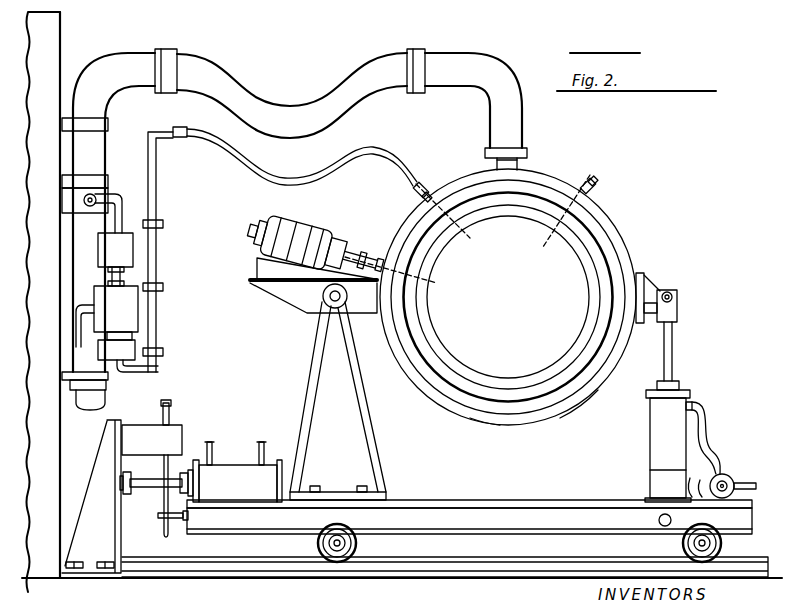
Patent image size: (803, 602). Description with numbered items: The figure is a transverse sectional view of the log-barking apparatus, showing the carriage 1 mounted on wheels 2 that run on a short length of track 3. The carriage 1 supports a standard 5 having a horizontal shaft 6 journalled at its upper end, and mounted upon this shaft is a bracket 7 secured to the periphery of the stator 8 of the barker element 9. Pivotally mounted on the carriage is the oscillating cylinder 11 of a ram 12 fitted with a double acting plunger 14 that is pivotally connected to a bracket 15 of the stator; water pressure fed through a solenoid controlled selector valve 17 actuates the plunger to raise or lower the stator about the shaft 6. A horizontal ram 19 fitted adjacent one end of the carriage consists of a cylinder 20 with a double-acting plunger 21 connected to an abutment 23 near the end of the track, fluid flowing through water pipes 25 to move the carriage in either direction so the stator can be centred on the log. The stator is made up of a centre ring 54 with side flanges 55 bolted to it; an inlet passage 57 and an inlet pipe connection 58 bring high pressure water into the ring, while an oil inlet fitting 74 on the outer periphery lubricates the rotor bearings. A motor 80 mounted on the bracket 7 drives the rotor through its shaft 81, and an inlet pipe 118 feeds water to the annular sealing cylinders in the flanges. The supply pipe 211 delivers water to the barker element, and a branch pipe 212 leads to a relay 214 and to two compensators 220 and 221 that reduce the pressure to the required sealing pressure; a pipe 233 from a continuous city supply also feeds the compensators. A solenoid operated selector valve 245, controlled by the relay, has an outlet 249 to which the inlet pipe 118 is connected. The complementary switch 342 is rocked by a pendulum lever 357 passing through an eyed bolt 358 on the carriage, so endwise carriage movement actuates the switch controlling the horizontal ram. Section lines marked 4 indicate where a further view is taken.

The carriage 1 is at (556, 522).
The wheels 2 is at (357, 543).
The track 3 is at (460, 568).
The section line 4- 4 is at (414, 181).
The standard 5 is at (358, 244).
The horizontal shaft 6 is at (322, 305).
The bracket 7 is at (250, 280).
The stator 8 is at (472, 420).
The barker element 9 is at (585, 402).
The oscillating cylinder 11 is at (650, 444).
The ram 12 is at (655, 470).
The double acting plunger 14 is at (672, 356).
The bracket 15 is at (648, 280).
The solenoid controlled selector valve 17 is at (730, 475).
The horizontal ram 19 is at (226, 503).
The cylinder 20 is at (222, 482).
The double-acting plunger 21 is at (148, 489).
The abutment 23 is at (105, 542).
The water pipes 25 is at (213, 455).
The centre ring 54 is at (625, 214).
The side flanges 55 is at (412, 320).
The inlet passage 57 is at (520, 172).
The inlet pipe connection 58 is at (494, 164).
The oil inlet fitting 74 is at (598, 189).
The motor 80 is at (308, 228).
The motor shaft 81 is at (346, 240).
The inlet pipe 118 is at (416, 191).
The supply pipe 211 is at (480, 65).
The branch pipe 212 is at (116, 206).
The relay 214 is at (106, 253).
The compensator 220 is at (140, 297).
The compensator 221 is at (135, 325).
The pipe 233 is at (75, 336).
The solenoid operated selector valve 245 is at (110, 372).
The outlet 249 is at (155, 262).
The complementary switch 342 is at (170, 430).
The pendulum lever 357 is at (164, 468).
The eyed bolt 358 is at (178, 520).